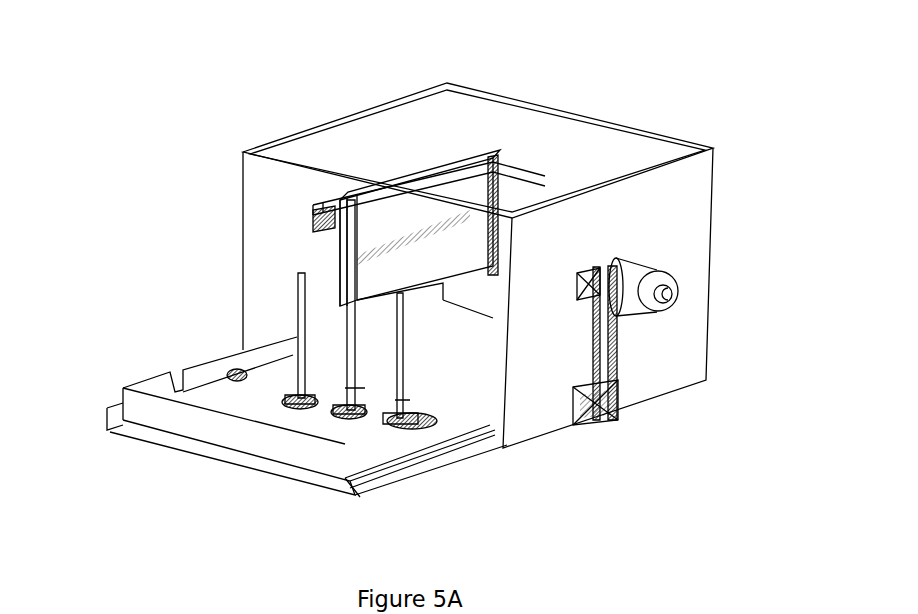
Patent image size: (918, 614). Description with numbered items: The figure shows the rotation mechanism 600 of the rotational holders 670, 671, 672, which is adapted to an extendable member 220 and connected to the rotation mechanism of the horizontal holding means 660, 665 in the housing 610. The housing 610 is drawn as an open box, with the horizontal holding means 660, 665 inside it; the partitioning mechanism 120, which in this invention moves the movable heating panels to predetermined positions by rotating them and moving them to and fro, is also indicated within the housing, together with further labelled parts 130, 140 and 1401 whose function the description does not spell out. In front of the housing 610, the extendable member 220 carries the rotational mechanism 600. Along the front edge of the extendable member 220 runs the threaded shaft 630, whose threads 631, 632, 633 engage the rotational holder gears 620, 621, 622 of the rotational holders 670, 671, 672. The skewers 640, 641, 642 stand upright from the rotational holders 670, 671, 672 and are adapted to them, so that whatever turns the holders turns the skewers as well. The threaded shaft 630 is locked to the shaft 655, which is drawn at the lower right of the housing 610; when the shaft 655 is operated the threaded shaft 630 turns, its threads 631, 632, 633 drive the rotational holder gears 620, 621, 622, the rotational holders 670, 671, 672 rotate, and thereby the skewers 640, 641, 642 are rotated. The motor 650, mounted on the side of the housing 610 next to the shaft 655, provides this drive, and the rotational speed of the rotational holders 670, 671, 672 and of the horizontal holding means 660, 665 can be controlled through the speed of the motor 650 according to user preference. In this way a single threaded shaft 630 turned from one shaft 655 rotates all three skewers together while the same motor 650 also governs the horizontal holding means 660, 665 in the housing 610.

The rotational mechanism 600 is at (250, 128).
The housing 610 is at (697, 138).
The top beam 130 is at (413, 173).
The cross member 140 is at (468, 172).
The horizontal holding means 665 is at (323, 218).
The panel 1401 is at (378, 248).
The partitioning mechanism 120 is at (496, 215).
The horizontal holding means 660 is at (595, 270).
The rotational holder 672 is at (490, 440).
The shaft 655 is at (612, 405).
The motor 650 is at (660, 326).
The extendable member 220 is at (172, 422).
The rotational holder 670 is at (283, 400).
The threaded shaft 630 is at (486, 441).
The skewer 640 is at (300, 330).
The skewer 641 is at (348, 316).
The skewer 642 is at (400, 298).
The thread 633 is at (318, 409).
The thread 632 is at (365, 418).
The thread 631 is at (427, 426).
The rotational holder gear 620 is at (285, 404).
The rotational holder gear 621 is at (336, 416).
The rotational holder gear 622 is at (392, 420).
The rotational holder 671 is at (357, 390).